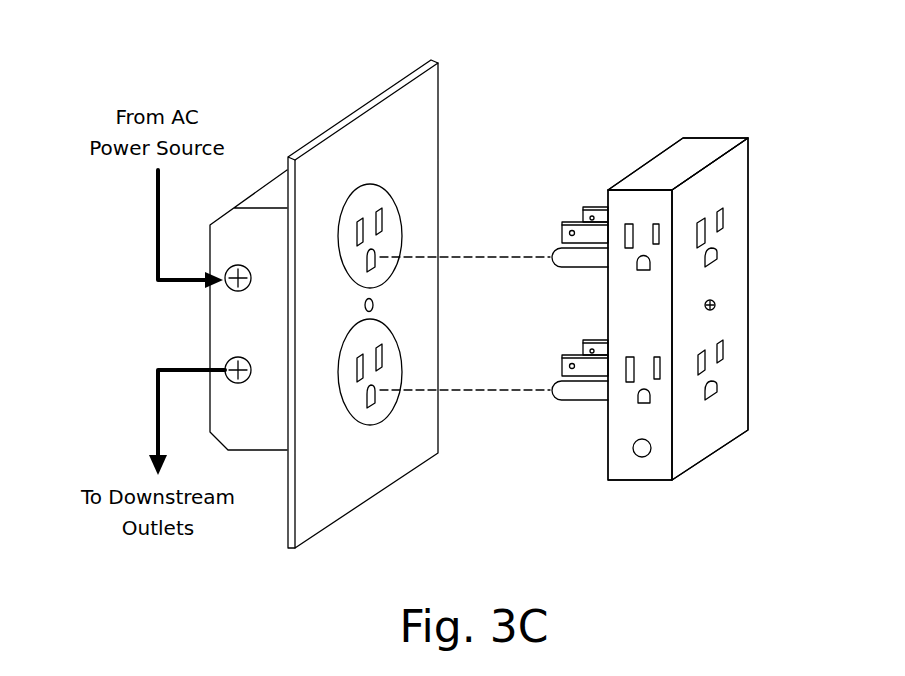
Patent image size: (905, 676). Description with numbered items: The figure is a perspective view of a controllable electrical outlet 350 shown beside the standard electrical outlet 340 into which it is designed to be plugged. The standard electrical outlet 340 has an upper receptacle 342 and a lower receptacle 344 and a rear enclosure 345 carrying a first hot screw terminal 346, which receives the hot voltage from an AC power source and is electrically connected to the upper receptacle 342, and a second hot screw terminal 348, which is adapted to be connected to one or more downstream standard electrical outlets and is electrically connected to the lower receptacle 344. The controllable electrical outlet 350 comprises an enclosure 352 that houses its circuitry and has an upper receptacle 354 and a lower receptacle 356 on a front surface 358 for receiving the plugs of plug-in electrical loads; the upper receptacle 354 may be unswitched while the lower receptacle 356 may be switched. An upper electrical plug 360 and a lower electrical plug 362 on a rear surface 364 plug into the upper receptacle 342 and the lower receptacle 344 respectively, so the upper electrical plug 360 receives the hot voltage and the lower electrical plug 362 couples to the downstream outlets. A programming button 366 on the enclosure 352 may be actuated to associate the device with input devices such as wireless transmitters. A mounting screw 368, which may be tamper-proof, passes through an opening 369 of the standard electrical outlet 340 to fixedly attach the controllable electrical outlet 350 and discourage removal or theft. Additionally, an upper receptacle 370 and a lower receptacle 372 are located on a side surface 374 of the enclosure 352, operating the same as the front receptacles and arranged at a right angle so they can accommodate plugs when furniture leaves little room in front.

The standard electrical outlet 340 is at (463, 157).
The upper receptacle 342 is at (362, 205).
The lower receptacle 344 is at (368, 410).
The rear enclosure 345 is at (228, 332).
The first hot screw terminal 346 is at (249, 266).
The second hot screw terminal 348 is at (247, 380).
The opening 369 is at (375, 300).
The controllable electrical outlet 350 is at (777, 180).
The enclosure 352 is at (672, 165).
The upper receptacle 354 is at (715, 192).
The lower receptacle 356 is at (718, 412).
The front surface 358 is at (740, 385).
The upper electrical plug 360 is at (585, 196).
The lower electrical plug 362 is at (570, 415).
The rear surface 364 is at (607, 457).
The programming button 366 is at (642, 457).
The mounting screw 368 is at (716, 305).
The upper receptacle 370 is at (643, 213).
The lower receptacle 372 is at (660, 400).
The side surface 374 is at (660, 325).